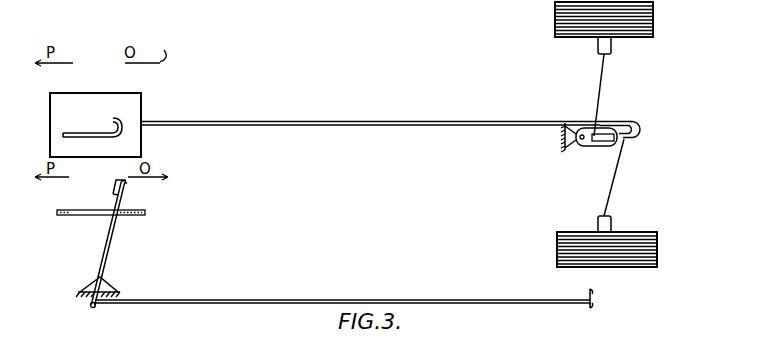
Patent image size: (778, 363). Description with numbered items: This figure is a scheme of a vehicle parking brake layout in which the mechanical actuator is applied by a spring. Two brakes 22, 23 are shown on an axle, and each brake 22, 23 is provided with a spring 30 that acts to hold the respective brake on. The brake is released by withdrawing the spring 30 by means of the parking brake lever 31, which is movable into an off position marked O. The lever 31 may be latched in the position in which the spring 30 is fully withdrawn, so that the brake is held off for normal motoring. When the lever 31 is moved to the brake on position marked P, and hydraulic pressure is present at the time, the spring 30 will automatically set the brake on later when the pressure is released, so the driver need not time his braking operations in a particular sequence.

The brake 22 is at (561, 256).
The brake 23 is at (566, 20).
The spring 30 is at (611, 45).
The parking brake lever 31 is at (102, 268).